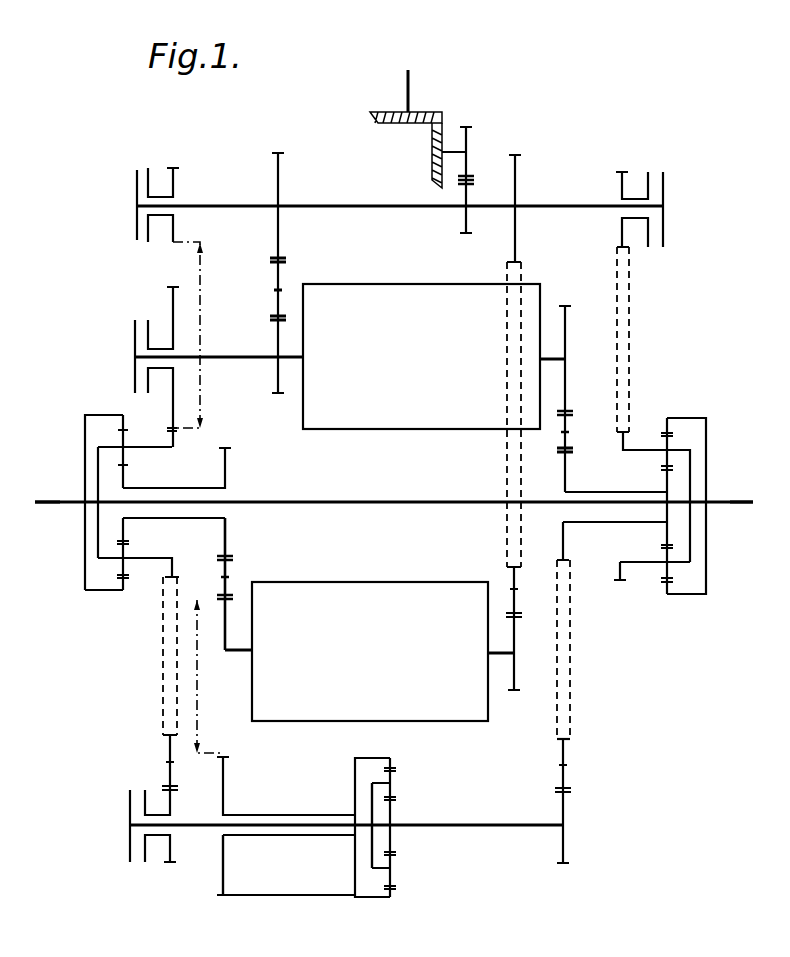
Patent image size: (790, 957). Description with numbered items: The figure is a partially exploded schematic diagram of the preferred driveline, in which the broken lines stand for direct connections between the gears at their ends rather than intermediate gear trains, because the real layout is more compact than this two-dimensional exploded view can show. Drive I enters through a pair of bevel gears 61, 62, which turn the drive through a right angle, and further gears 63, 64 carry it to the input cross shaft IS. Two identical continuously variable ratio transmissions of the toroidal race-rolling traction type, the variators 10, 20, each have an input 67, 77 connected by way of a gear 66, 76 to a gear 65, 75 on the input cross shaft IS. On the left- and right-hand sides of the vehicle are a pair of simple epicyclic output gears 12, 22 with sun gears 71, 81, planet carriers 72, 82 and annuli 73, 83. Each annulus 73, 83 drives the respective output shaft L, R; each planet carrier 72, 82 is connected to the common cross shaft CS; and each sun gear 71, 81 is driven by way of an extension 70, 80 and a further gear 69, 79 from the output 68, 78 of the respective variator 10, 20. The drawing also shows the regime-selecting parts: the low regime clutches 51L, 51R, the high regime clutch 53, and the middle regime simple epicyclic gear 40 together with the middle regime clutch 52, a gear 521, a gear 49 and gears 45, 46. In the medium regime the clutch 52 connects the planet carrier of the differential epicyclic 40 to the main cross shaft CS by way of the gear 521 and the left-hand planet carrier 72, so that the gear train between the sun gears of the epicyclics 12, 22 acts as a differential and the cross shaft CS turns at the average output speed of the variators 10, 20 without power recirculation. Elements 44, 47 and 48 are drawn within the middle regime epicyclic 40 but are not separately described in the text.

The variator 10 is at (371, 581).
The variator 20 is at (411, 252).
The simple epicyclic output gear 12 is at (84, 422).
The simple epicyclic output gear 22 is at (733, 400).
The middle regime simple epicyclic gear 40 is at (355, 868).
The clutch 44 is at (391, 844).
The gear 45 is at (565, 815).
The gear 46 is at (565, 782).
The clutch member 47 is at (372, 786).
The clutch member 48 is at (355, 766).
The gear 49 is at (226, 781).
The low regime clutch 51L is at (135, 180).
The low regime clutch 51R is at (667, 187).
The middle regime clutch 52 is at (130, 821).
The gear 521 is at (168, 747).
The high regime clutch 53 is at (135, 330).
The bevel gear 61 is at (428, 112).
The bevel gear 62 is at (444, 118).
The gear 63 is at (467, 138).
The gear 64 is at (467, 195).
The gear 65 is at (516, 193).
The gear 66 is at (511, 578).
The input 67 is at (516, 680).
The output 68 is at (227, 628).
The gear 69 is at (227, 565).
The extension 70 is at (228, 465).
The sun gear 71 is at (123, 525).
The planet carrier 72 is at (98, 548).
The annulus 73 is at (85, 588).
The gear 75 is at (276, 228).
The gear 76 is at (281, 277).
The input 77 is at (277, 333).
The output 78 is at (565, 327).
The gear 79 is at (566, 425).
The extension 80 is at (565, 480).
The sun gear 81 is at (693, 475).
The planet carrier 82 is at (690, 548).
The annulus 83 is at (706, 588).
The drive I is at (408, 76).
The input cross shaft IS is at (367, 206).
The common cross shaft CS is at (325, 502).
The output shaft L is at (49, 500).
The output shaft R is at (751, 500).